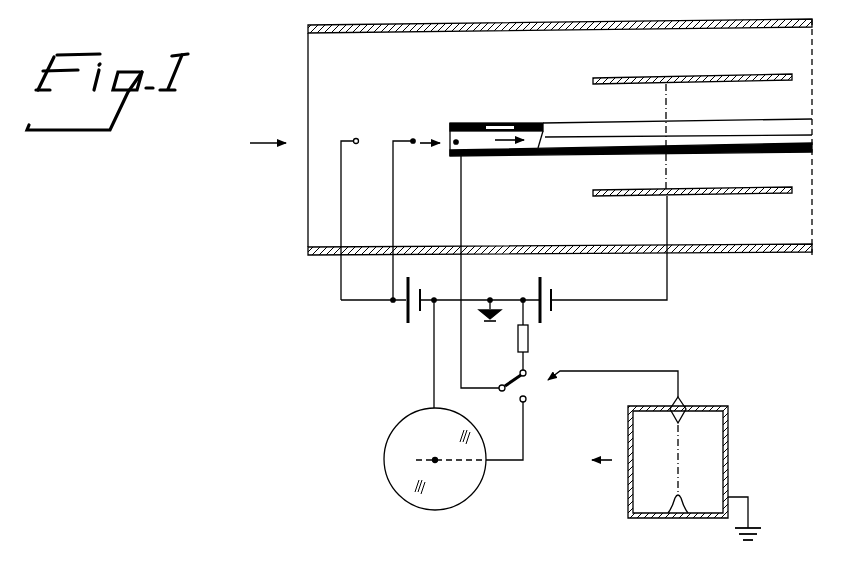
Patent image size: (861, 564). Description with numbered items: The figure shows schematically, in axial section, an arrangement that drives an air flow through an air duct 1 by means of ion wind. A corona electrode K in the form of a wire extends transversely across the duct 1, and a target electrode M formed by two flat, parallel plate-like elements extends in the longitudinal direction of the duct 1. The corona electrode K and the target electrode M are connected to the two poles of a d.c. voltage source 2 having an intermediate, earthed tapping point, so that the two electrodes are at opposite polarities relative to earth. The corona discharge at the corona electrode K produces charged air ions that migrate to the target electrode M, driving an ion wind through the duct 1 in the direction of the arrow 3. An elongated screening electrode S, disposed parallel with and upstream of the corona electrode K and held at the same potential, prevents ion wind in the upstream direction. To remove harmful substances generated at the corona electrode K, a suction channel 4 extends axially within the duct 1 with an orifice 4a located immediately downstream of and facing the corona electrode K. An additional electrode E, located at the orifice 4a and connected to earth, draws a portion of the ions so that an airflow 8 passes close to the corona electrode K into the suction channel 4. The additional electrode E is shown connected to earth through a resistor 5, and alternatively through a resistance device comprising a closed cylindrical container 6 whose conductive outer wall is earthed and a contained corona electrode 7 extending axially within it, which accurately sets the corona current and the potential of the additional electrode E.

The air duct 1 is at (307, 29).
The d.c. voltage source 2 is at (402, 308).
The arrow 3 is at (268, 142).
The suction channel 4 is at (516, 124).
The orifice 4a is at (450, 123).
The resistor 5 is at (530, 340).
The closed container 6 is at (384, 452).
The contained corona electrode 7 is at (692, 460).
The airflow 8 is at (424, 139).
The screening electrode S is at (350, 220).
The corona electrode K is at (404, 219).
The additional electrode E is at (458, 144).
The target electrode M is at (655, 77).